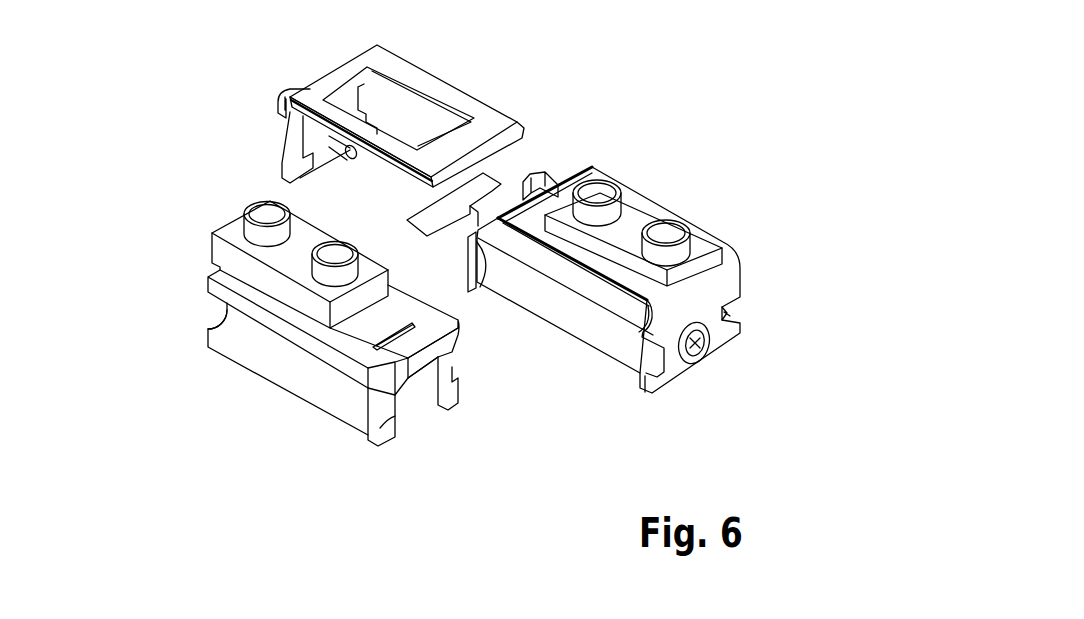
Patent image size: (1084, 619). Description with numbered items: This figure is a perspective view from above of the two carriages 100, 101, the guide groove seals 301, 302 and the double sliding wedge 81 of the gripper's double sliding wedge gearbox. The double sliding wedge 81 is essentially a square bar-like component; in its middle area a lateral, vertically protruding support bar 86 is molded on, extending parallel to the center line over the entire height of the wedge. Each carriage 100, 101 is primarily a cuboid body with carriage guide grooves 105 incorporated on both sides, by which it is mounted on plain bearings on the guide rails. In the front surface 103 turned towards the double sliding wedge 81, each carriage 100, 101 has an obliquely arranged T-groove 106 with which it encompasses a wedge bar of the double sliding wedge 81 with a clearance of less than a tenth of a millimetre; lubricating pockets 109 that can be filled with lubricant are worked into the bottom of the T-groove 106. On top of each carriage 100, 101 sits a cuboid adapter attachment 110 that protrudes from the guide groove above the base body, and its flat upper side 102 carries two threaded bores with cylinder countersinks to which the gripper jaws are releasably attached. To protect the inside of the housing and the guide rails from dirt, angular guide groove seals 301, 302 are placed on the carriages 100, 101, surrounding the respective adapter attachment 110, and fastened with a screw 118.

The guide groove seal 301 is at (458, 96).
The double sliding wedge 81 is at (482, 187).
The support bar 86 is at (472, 250).
The upper side 102 is at (635, 213).
The adapter attachment 110 is at (223, 257).
The carriage guide grooves 105 is at (233, 333).
The carriage 100 is at (221, 358).
The lubricating pockets 109 is at (393, 333).
The T-groove 106 is at (406, 346).
The front surface 103 is at (388, 430).
The guide groove seal 302 is at (731, 262).
The carriage 101 is at (727, 309).
The screw 118 is at (705, 340).